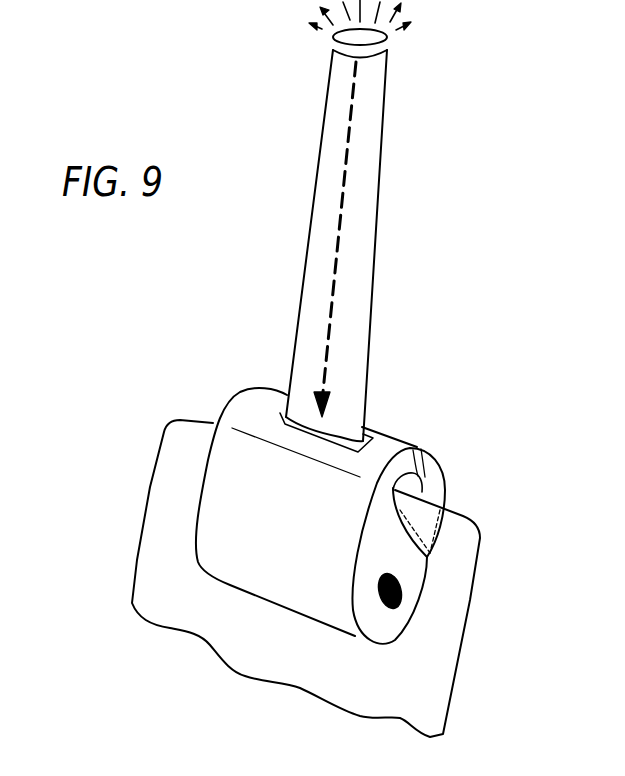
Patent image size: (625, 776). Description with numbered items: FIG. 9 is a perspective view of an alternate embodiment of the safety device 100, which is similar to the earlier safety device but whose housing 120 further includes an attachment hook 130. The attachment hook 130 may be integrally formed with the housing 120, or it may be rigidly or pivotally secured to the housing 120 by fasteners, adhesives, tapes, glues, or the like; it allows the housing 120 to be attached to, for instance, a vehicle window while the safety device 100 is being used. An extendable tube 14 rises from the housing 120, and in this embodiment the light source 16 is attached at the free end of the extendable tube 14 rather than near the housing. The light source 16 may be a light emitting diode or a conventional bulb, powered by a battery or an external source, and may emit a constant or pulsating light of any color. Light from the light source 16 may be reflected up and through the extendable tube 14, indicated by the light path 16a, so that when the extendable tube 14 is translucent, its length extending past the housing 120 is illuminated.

The safety device 100 is at (525, 121).
The extendable tube 14 is at (377, 206).
The light source 16 is at (332, 47).
The light path 16a is at (335, 295).
The housing 120 is at (243, 593).
The attachment hook 130 is at (443, 472).